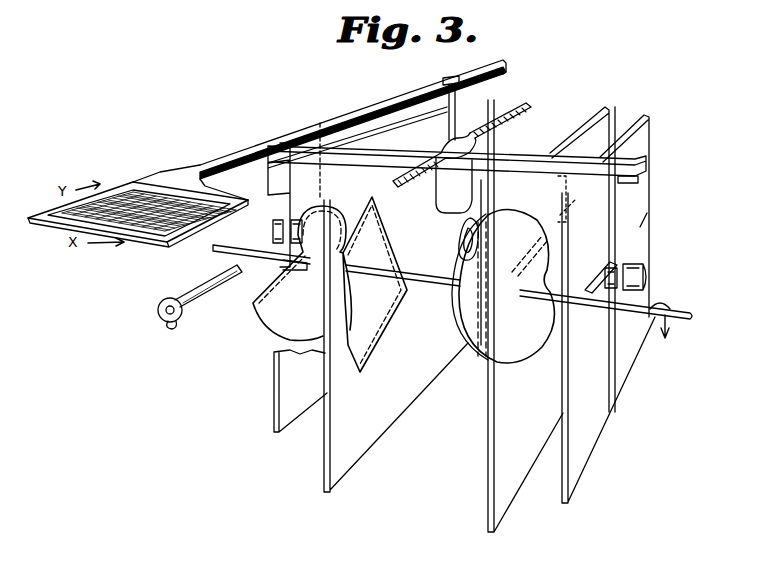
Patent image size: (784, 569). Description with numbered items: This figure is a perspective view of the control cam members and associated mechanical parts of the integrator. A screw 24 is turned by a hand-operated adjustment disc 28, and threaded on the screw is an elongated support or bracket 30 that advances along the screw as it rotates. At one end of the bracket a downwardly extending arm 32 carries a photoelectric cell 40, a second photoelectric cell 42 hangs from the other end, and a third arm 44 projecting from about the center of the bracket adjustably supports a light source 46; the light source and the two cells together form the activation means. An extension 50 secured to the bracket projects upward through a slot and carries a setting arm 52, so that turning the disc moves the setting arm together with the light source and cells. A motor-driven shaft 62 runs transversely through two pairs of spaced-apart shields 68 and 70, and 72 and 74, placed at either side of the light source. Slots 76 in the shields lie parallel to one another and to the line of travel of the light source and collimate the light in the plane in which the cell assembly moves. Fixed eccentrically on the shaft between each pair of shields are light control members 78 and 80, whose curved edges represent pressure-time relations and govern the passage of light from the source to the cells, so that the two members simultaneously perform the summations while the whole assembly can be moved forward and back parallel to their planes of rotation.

The screw 24 is at (528, 103).
The hand-operated adjustment disc 28 is at (164, 313).
The elongated support or bracket 30 is at (513, 154).
The downwardly extending arm 32 is at (630, 252).
The photoelectric cell 40 is at (645, 280).
The photoelectric cell 42 is at (272, 233).
The third arm 44 is at (443, 192).
The light source 46 is at (459, 246).
The extension 50 is at (462, 88).
The setting arm 52 is at (210, 170).
The shaft 62 is at (690, 312).
The shield member 68 is at (570, 458).
The shield member 70 is at (497, 500).
The shield member 72 is at (328, 476).
The shield member 74 is at (281, 388).
The slots 76 is at (378, 198).
The light control member 78 is at (471, 355).
The light control member 80 is at (266, 310).